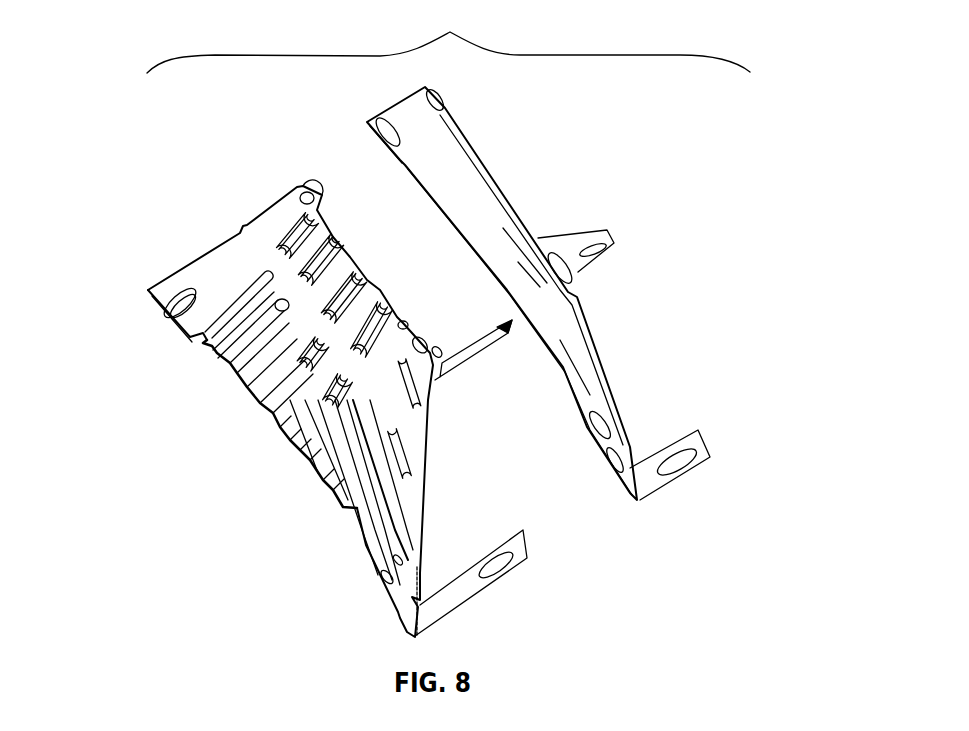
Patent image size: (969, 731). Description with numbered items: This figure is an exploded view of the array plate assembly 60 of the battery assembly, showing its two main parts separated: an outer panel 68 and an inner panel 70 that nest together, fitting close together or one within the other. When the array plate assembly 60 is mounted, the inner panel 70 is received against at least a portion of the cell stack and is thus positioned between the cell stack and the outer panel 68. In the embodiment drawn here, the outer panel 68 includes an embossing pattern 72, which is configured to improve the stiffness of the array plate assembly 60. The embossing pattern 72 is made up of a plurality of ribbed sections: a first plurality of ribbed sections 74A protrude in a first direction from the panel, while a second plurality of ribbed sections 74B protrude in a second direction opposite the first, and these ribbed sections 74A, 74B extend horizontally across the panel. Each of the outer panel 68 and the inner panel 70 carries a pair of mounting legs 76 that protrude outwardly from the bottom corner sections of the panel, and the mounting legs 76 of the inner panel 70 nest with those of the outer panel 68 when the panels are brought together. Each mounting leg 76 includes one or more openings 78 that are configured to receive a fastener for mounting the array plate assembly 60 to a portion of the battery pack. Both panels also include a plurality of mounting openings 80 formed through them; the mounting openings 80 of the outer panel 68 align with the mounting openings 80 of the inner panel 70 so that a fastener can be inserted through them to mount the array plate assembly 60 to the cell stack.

The array plate assembly 60 is at (448, 36).
The outer panel 68 is at (270, 230).
The inner panel 70 is at (470, 172).
The embossing pattern 72 is at (268, 429).
The first plurality of ribbed sections 74A is at (233, 297).
The second plurality of ribbed sections 74B is at (217, 343).
The mounting legs 76 is at (573, 260).
The openings 78 is at (600, 247).
The mounting openings 80 is at (383, 122).